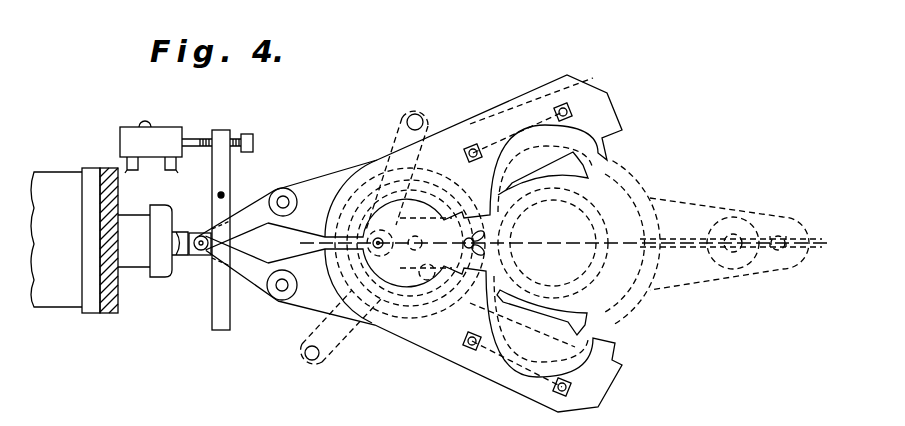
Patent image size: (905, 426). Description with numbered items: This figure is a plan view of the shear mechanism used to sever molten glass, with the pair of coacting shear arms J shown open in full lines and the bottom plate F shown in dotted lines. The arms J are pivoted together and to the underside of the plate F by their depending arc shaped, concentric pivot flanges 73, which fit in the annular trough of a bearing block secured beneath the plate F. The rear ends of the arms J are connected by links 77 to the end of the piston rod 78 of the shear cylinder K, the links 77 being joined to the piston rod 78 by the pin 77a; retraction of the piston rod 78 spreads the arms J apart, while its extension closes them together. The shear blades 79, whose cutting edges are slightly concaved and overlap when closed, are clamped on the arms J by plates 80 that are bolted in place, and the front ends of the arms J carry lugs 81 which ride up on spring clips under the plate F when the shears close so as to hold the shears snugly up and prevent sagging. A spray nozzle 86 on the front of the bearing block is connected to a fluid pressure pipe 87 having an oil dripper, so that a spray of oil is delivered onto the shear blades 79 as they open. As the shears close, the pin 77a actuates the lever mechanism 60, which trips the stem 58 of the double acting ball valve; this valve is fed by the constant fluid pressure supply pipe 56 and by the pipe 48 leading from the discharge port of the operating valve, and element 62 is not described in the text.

The shear cylinder K is at (74, 240).
The block 62 is at (151, 124).
The stem 58 is at (200, 139).
The constant fluid pressure supply pipe 56 is at (129, 171).
The pipe 48 is at (176, 171).
The lever mechanism 60 is at (230, 174).
The piston rod 78 is at (189, 233).
The pin 77a is at (200, 256).
The links 77 is at (266, 266).
The pivot flanges 73 is at (448, 130).
The shear arms J is at (522, 100).
The plates 80 is at (573, 112).
The lugs 81 is at (608, 107).
The shear blades 79 is at (556, 192).
The spray nozzle 86 is at (463, 243).
The bottom plate F is at (722, 282).
The fluid pressure pipe 87 is at (812, 262).